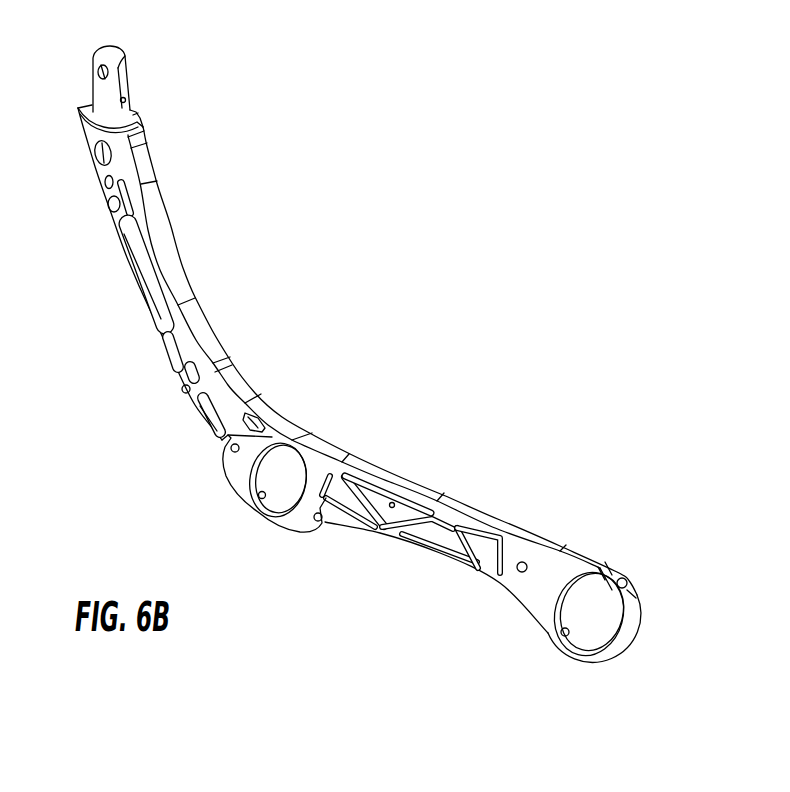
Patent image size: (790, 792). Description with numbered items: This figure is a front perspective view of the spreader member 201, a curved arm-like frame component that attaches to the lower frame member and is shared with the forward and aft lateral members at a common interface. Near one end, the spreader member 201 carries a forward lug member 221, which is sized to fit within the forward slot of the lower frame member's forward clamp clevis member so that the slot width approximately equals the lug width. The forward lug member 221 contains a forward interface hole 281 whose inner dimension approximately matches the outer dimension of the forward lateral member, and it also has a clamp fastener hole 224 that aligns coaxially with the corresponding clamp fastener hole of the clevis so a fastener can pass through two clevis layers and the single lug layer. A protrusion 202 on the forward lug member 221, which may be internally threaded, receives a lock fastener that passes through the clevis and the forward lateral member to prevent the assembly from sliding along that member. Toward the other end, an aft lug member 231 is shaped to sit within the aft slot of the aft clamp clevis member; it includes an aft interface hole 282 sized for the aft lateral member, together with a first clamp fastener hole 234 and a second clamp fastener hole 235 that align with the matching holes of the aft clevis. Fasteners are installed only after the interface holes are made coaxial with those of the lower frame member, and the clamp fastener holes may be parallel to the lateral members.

The spreader member 201 is at (531, 266).
The protrusion 202 is at (627, 580).
The forward lug member 221 is at (638, 617).
The clamp fastener hole 224 is at (520, 573).
The aft lug member 231 is at (288, 524).
The first clamp fastener hole 234 is at (318, 522).
The second clamp fastener hole 235 is at (233, 455).
The forward interface hole 281 is at (598, 638).
The aft interface hole 282 is at (277, 460).